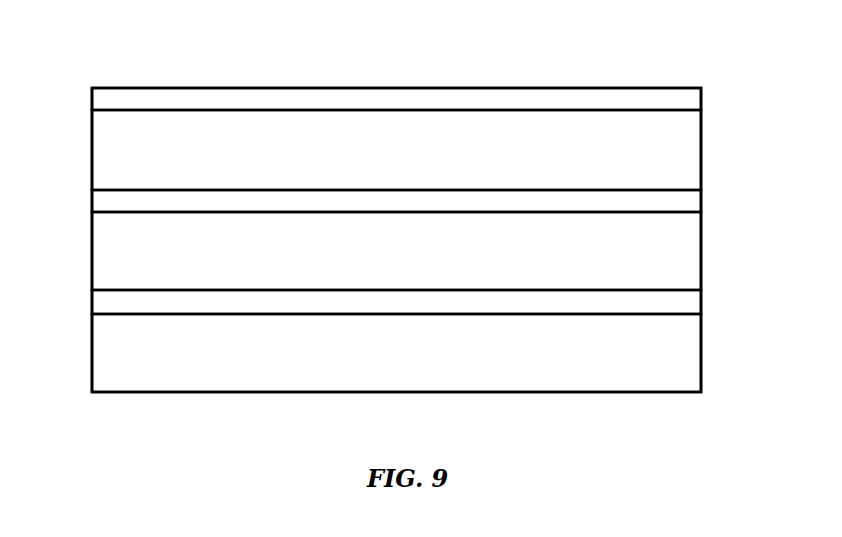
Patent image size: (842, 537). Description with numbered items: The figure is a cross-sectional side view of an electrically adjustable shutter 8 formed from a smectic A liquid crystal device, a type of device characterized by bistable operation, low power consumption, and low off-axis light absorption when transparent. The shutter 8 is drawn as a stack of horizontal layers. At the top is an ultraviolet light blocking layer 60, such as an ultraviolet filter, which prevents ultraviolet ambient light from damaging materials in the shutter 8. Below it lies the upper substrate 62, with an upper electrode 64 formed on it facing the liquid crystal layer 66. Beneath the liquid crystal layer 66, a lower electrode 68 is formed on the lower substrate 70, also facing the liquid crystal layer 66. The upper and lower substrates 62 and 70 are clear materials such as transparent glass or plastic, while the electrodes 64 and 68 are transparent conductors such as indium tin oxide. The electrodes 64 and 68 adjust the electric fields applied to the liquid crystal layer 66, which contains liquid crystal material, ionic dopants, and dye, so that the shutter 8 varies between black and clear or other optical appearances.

The shutter 8 is at (75, 62).
The ultraviolet light blocking layer 60 is at (697, 101).
The upper substrate 62 is at (697, 149).
The upper electrode 64 is at (697, 200).
The liquid crystal layer 66 is at (697, 251).
The lower electrode 68 is at (697, 301).
The lower substrate 70 is at (697, 353).